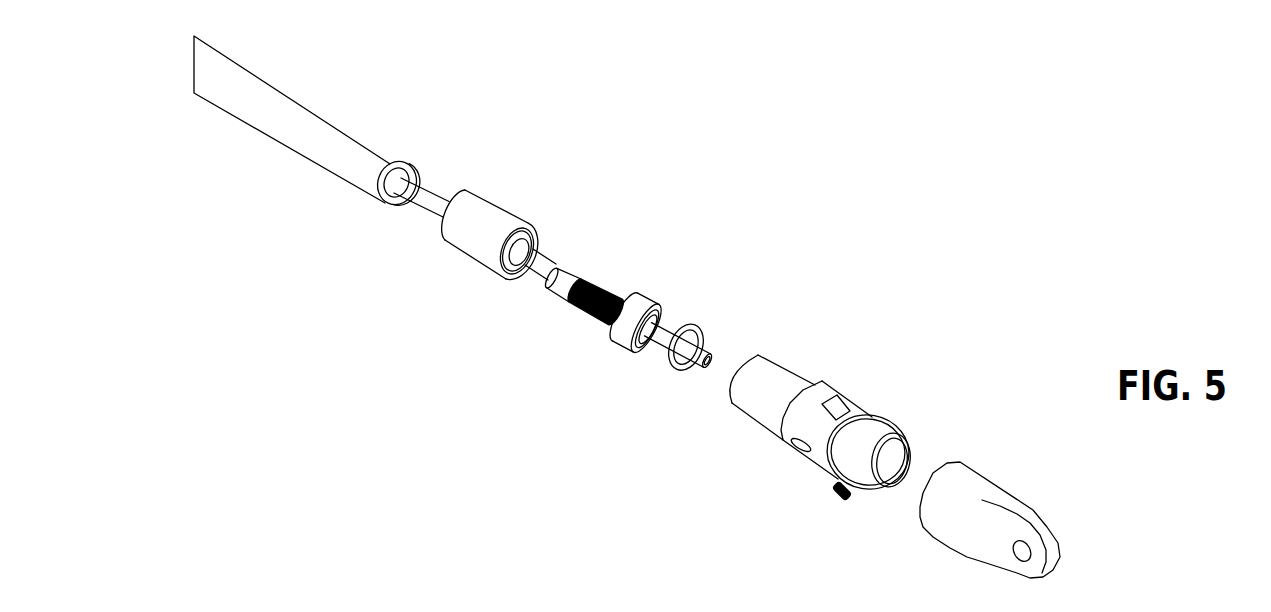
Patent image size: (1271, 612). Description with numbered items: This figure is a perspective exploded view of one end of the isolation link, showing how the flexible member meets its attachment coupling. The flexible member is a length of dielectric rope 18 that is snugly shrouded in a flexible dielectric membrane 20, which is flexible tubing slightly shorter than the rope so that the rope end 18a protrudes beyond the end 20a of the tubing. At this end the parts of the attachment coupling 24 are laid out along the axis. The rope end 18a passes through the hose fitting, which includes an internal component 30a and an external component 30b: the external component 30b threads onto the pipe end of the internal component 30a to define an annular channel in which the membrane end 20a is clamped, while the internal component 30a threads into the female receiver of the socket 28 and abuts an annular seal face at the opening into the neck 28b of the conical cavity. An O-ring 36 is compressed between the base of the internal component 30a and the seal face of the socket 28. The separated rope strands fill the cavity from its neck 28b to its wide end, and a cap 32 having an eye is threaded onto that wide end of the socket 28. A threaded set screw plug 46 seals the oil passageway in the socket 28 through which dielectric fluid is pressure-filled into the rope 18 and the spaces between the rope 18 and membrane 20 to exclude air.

The dielectric rope 18 is at (424, 212).
The end of the rope 18a is at (711, 347).
The dielectric membrane 20 is at (331, 119).
The end of the flexible membrane 20a is at (403, 160).
The attachment coupling 24 is at (887, 386).
The socket 28 is at (873, 420).
The neck 28b is at (895, 460).
The internal component 30a is at (620, 260).
The external component 30b is at (530, 186).
The cap 32 is at (979, 469).
The O-ring 36 is at (689, 326).
The threaded set screw plug 46 is at (836, 504).